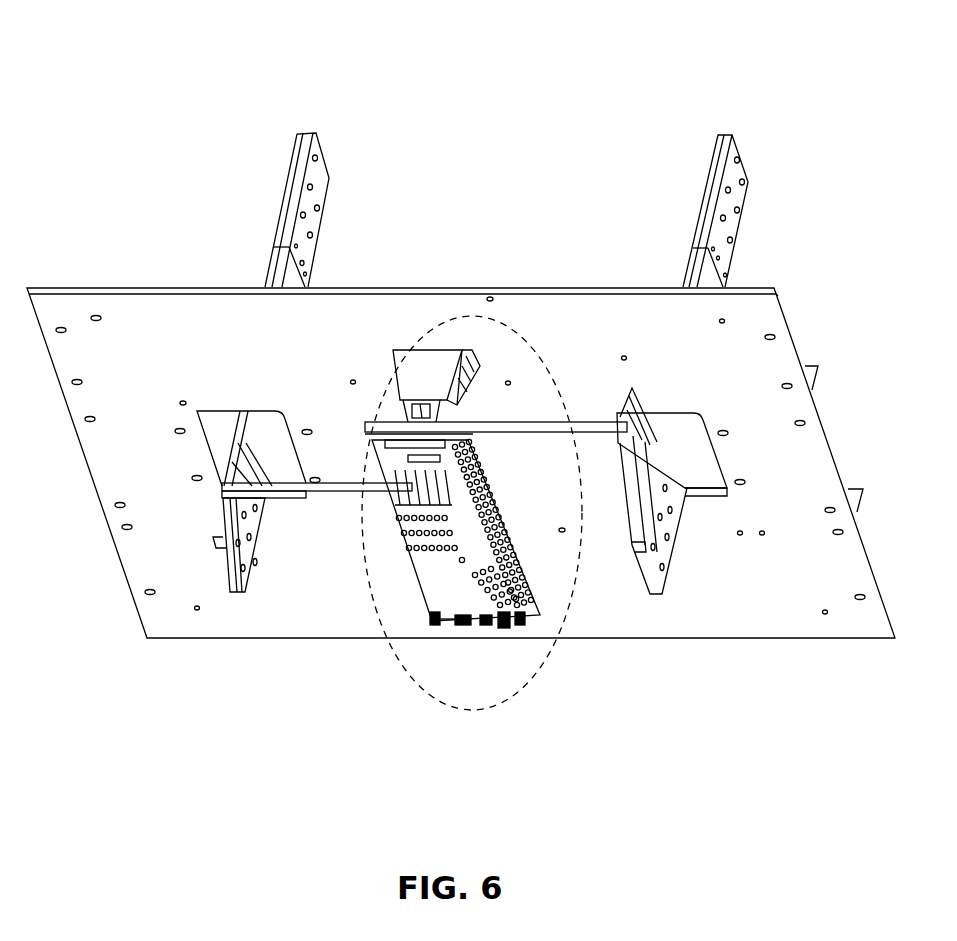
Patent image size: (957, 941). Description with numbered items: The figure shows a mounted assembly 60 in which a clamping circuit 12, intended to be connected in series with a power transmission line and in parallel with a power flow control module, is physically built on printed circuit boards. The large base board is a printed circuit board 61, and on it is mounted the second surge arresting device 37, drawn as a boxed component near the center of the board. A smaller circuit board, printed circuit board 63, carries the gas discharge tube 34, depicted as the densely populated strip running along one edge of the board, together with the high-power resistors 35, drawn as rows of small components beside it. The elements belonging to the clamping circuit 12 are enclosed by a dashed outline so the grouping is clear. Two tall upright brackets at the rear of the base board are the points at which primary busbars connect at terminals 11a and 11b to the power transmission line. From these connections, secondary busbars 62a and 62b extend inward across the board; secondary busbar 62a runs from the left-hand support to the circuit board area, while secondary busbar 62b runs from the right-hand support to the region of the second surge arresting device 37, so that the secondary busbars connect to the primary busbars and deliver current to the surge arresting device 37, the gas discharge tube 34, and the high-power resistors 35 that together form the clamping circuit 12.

The test fixture assembly 60 is at (590, 93).
The printed circuit board 61 is at (568, 298).
The terminal 11a is at (285, 195).
The terminal 11b is at (730, 200).
The secondary busbar 62a is at (330, 497).
The secondary busbar 62b is at (597, 433).
The second surge arresting device 37 is at (425, 380).
The printed circuit board 63 is at (445, 590).
The high-power resistors 35 is at (432, 551).
The gas discharge tube 34 is at (487, 487).
The clamping circuit 12 is at (445, 708).